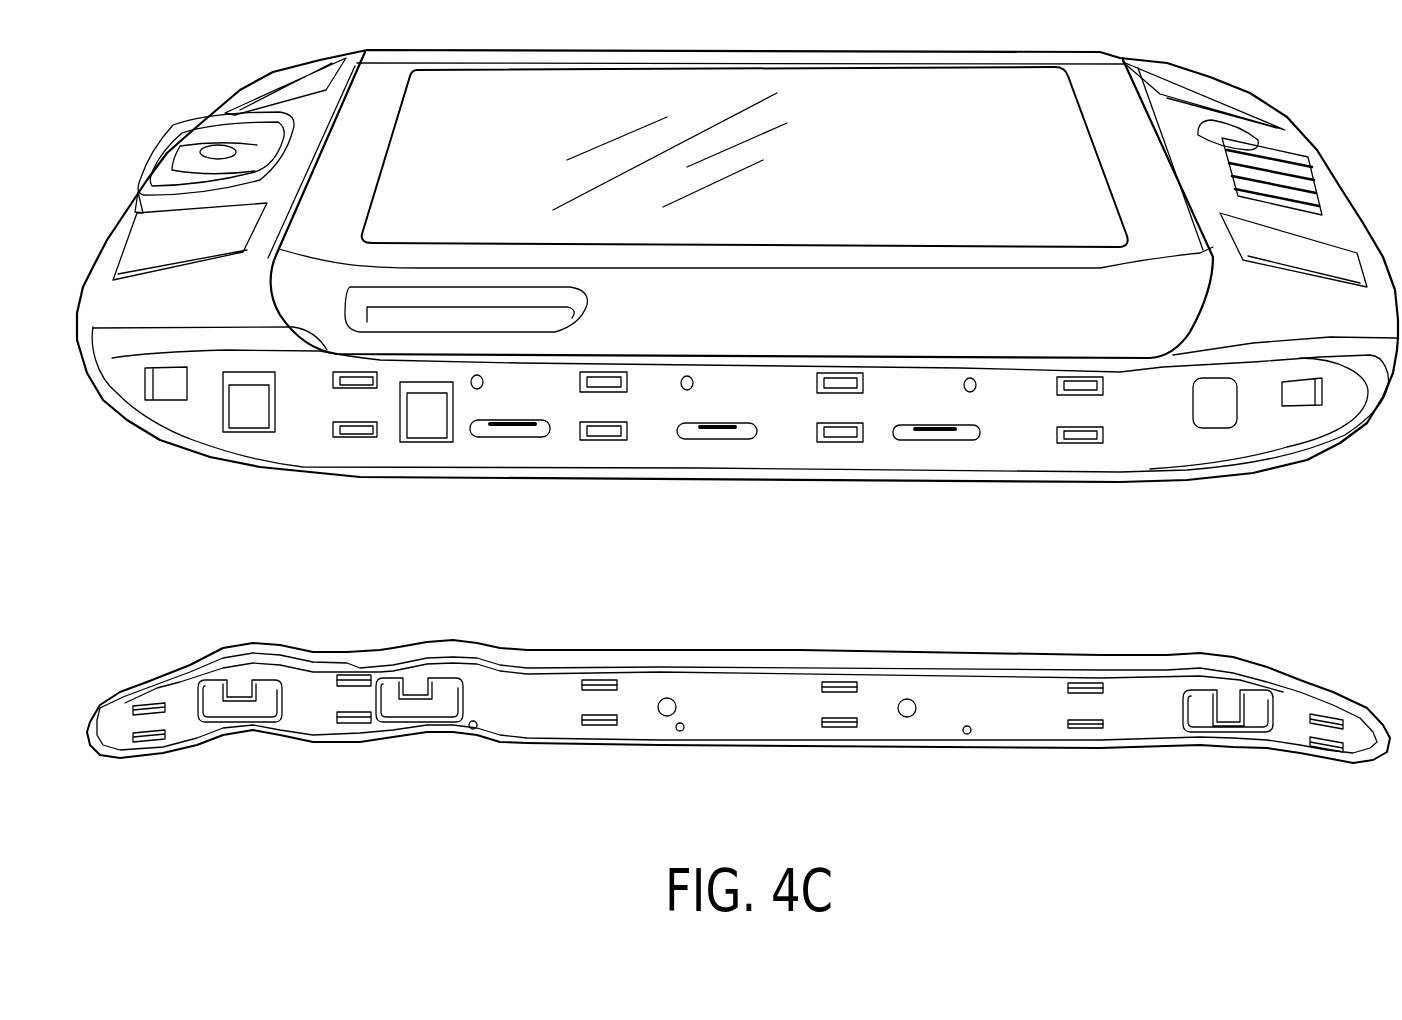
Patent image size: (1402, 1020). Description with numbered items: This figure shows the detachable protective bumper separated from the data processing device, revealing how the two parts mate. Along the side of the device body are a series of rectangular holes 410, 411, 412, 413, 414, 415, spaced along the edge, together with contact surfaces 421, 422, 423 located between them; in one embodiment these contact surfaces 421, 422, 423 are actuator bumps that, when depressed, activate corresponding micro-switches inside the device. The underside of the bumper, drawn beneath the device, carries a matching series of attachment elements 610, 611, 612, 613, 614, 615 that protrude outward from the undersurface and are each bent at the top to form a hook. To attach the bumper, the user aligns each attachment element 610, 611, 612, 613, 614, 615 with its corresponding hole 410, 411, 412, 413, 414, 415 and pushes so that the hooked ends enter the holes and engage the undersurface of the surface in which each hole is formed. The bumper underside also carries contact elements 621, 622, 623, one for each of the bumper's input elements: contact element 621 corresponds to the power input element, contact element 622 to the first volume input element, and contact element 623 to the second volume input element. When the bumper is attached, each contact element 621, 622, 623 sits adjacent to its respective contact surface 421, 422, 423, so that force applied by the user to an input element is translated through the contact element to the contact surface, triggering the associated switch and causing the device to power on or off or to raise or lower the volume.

The rectangular hole 410 is at (160, 385).
The rectangular hole 411 is at (337, 437).
The rectangular hole 412 is at (597, 433).
The rectangular hole 413 is at (833, 437).
The rectangular hole 414 is at (1067, 440).
The rectangular hole 415 is at (1310, 385).
The contact surface 421 is at (1213, 417).
The contact surface 422 is at (245, 410).
The contact surface 423 is at (430, 417).
The attachment element 610 is at (150, 735).
The attachment element 611 is at (338, 727).
The attachment element 612 is at (587, 720).
The attachment element 613 is at (827, 723).
The attachment element 614 is at (1070, 727).
The attachment element 615 is at (1322, 745).
The contact element 621 is at (1217, 710).
The contact element 622 is at (235, 713).
The contact element 623 is at (415, 707).